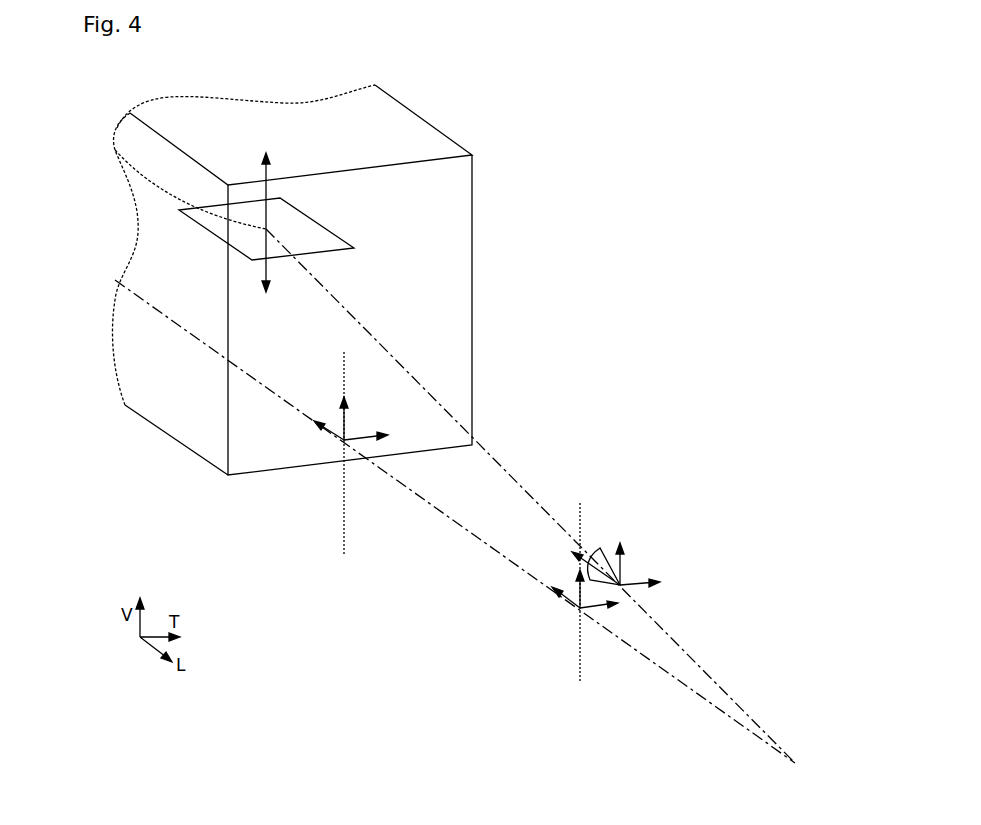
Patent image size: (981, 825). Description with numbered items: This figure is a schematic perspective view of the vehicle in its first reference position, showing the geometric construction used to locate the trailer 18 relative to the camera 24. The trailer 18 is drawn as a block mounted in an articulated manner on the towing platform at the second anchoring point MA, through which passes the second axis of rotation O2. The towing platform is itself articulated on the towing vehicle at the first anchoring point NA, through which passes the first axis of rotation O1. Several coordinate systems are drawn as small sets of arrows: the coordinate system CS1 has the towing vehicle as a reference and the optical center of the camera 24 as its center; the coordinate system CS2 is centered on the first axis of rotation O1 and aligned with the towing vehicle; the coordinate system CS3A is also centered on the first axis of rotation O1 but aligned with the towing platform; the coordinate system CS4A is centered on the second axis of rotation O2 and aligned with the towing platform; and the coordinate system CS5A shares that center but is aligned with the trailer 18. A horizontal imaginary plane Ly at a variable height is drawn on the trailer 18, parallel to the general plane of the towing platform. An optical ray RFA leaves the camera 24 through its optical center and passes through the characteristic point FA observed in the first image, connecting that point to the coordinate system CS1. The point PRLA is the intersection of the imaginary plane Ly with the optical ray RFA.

The trailer 18 is at (462, 113).
The camera 24 is at (605, 537).
The horizontal imaginary plane Ly is at (115, 150).
The intersection point PRLA is at (270, 228).
The characteristic point FA is at (268, 247).
The optical ray RFA is at (377, 338).
The second anchoring point MA is at (338, 447).
The coordinate system CS4 CS4A is at (216, 478).
The coordinate system CS5 CS5A is at (336, 438).
The second axis of rotation O2 is at (343, 543).
The coordinate system CS1 is at (657, 582).
The coordinate system CS3 CS3A is at (596, 607).
The first anchoring point NA is at (578, 609).
The first axis of rotation O1 is at (578, 653).
The coordinate system CS2 is at (600, 608).